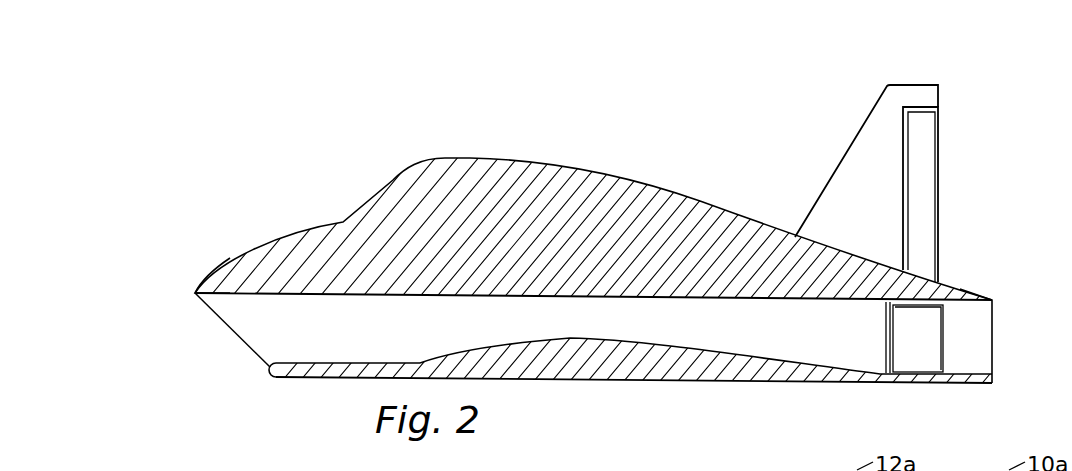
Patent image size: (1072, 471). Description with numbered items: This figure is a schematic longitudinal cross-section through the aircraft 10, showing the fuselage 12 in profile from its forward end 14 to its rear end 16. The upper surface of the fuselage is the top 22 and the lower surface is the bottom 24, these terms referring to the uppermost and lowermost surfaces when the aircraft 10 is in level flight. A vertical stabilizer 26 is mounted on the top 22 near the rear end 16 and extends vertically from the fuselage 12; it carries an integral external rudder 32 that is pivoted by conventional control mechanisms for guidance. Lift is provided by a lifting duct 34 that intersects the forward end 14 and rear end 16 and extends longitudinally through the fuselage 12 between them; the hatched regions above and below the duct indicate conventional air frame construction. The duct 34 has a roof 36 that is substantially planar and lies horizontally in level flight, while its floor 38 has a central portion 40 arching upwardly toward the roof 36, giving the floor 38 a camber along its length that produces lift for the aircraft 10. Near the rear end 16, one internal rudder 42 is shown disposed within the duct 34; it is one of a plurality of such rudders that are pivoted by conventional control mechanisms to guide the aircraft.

The aircraft 10 is at (621, 244).
The fuselage 12 is at (632, 225).
The forward end 14 is at (193, 291).
The rear end 16 is at (995, 296).
The top 22 is at (538, 157).
The bottom 24 is at (641, 384).
The vertical stabilizer 26 is at (892, 108).
The external rudder 32 is at (930, 142).
The lifting duct 34 is at (264, 341).
The roof 36 is at (512, 299).
The floor 38 is at (650, 363).
The central portion 40 is at (639, 341).
The internal rudder 42 is at (939, 333).